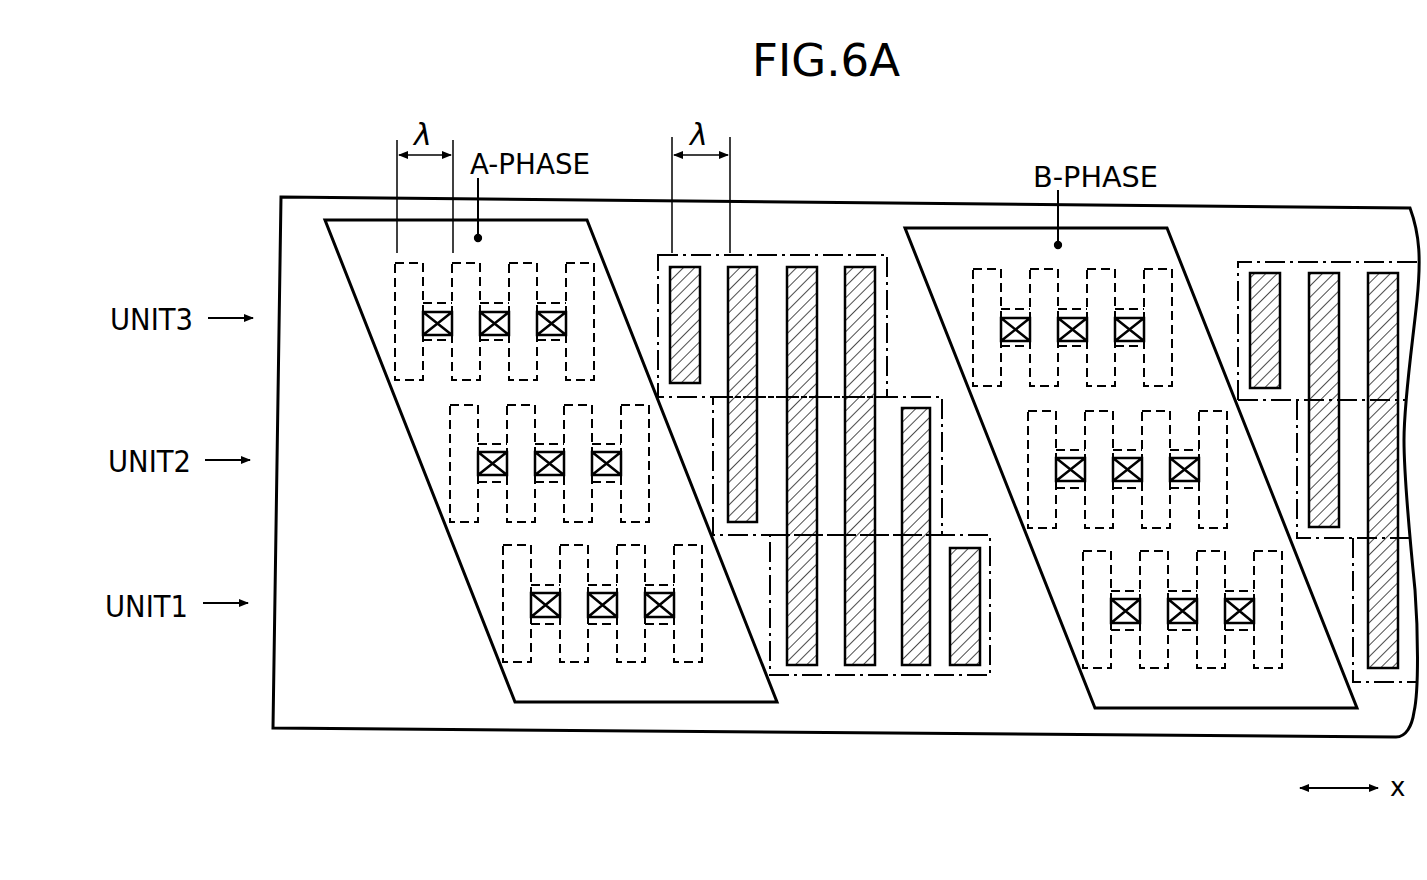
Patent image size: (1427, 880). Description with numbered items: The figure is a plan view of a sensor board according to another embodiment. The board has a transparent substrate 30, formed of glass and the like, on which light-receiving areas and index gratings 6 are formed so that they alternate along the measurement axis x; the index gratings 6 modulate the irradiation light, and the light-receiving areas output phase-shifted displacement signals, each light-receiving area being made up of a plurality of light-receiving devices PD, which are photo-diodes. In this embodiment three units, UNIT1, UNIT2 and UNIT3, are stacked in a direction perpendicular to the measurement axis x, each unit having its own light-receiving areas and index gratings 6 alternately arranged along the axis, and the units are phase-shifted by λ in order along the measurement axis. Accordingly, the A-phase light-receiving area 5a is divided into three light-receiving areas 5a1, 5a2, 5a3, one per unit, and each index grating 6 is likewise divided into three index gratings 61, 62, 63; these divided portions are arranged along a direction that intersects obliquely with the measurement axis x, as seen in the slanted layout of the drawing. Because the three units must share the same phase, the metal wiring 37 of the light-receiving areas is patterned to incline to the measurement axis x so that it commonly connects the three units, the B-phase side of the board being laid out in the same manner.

The transparent substrate 30 is at (1063, 720).
The metal wiring 37 is at (697, 700).
The light-receiving area 5a is at (789, 520).
The light-receiving area 5a1 is at (384, 313).
The light-receiving area 5a2 is at (437, 455).
The light-receiving area 5a3 is at (494, 596).
The light-receiving device PD is at (473, 262).
The index grating 6 is at (1022, 413).
The index grating 61 is at (659, 275).
The index grating 62 is at (714, 445).
The index grating 63 is at (770, 590).